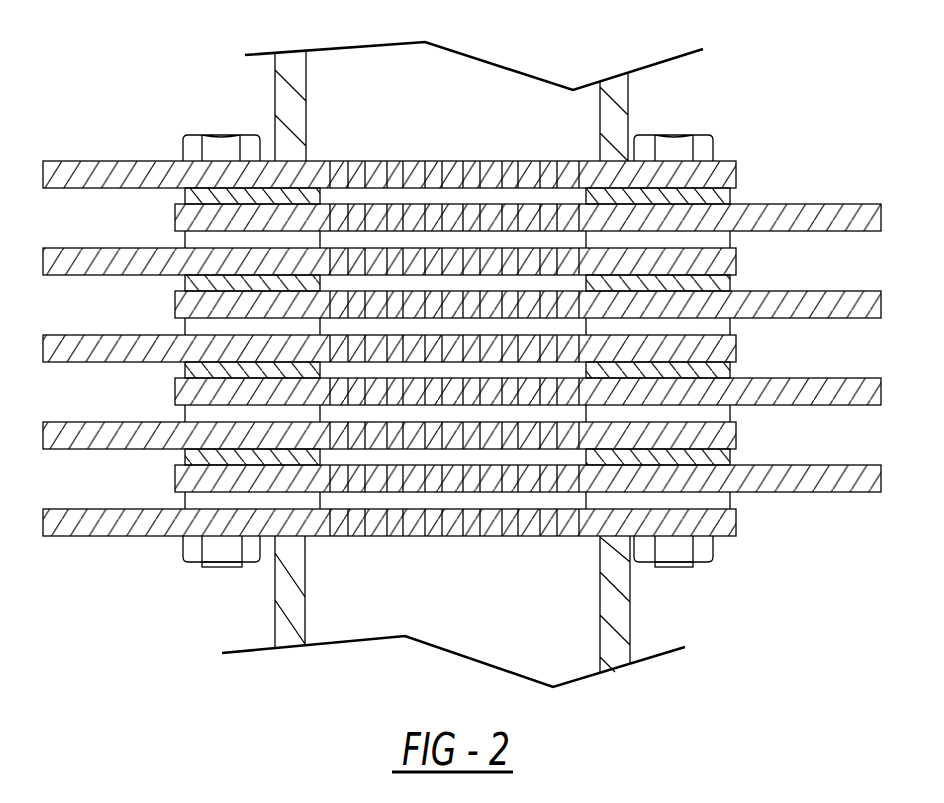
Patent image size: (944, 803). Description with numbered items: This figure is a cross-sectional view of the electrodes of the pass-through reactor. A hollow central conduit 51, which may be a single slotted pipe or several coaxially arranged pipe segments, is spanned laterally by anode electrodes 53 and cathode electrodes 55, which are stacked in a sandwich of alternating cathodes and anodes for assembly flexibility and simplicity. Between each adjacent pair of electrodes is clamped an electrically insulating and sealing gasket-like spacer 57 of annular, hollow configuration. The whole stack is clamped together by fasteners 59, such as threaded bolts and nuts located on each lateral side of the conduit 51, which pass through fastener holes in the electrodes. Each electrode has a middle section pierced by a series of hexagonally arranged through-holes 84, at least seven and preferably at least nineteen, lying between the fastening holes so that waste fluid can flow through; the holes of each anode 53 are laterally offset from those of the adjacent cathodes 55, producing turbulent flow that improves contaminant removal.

The through-holes 84 is at (341, 217).
The hollow central conduit 51 is at (622, 92).
The fasteners 59 is at (710, 143).
The gasket-like spacers 57 is at (722, 193).
The anode electrode 53 is at (328, 495).
The cathode electrode 55 is at (601, 537).